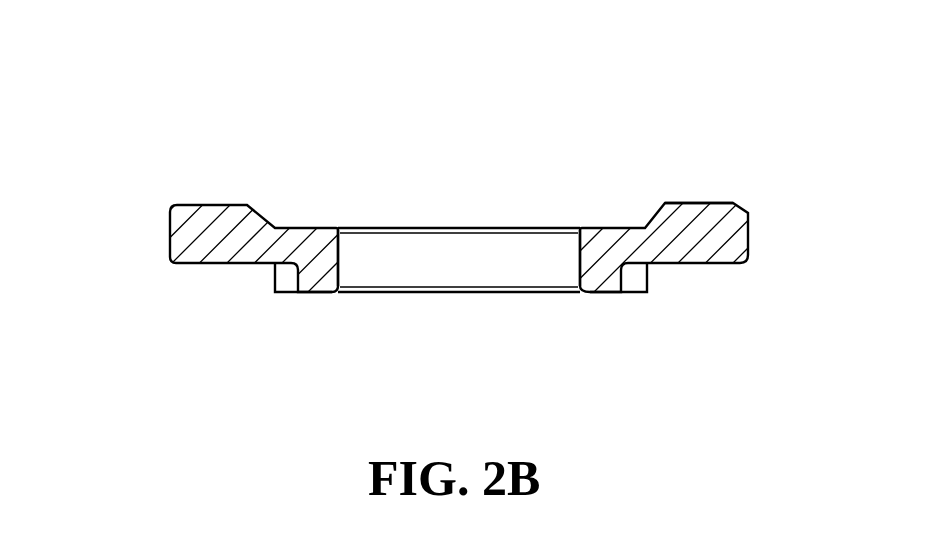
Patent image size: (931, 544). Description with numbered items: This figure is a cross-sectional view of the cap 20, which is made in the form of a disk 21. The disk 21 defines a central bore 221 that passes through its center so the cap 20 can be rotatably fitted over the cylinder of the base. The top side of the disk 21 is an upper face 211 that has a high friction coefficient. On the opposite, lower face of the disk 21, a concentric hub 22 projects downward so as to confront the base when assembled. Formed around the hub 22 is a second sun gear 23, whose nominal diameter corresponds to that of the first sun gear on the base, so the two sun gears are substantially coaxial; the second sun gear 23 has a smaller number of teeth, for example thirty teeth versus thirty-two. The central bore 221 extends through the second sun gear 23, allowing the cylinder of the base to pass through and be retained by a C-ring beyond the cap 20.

The cap 20 is at (158, 245).
The disk 21 is at (718, 232).
The upper face 211 is at (698, 203).
The central bore 221 is at (580, 252).
The hub 22 is at (604, 292).
The second sun gear 23 is at (637, 283).